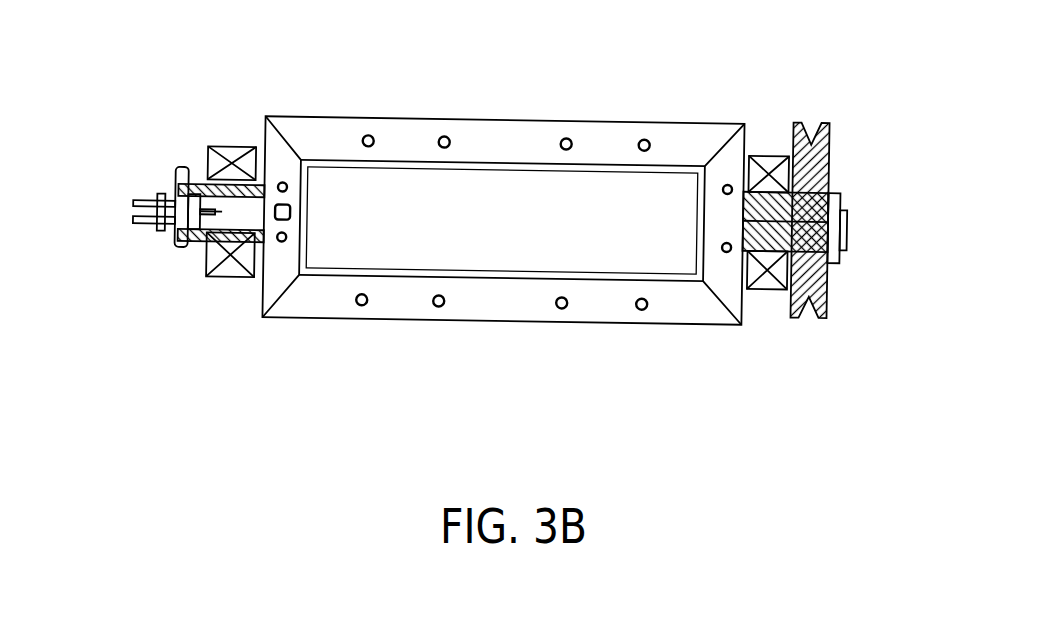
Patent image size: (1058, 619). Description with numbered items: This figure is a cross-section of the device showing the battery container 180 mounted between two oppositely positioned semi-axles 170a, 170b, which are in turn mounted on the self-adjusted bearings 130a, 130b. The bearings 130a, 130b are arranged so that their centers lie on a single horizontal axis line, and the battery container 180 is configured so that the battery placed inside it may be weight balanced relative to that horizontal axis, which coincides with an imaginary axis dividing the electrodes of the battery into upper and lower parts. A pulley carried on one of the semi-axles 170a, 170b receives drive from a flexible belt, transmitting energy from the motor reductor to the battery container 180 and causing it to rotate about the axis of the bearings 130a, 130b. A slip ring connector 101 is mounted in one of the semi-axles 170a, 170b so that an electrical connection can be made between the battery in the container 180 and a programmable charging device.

The slip ring connector 101 is at (158, 236).
The self-adjusted bearing 130a is at (767, 302).
The self-adjusted bearing 130b is at (213, 286).
The semi-axle 170a is at (804, 224).
The semi-axle 170b is at (186, 242).
The battery container 180 is at (610, 140).